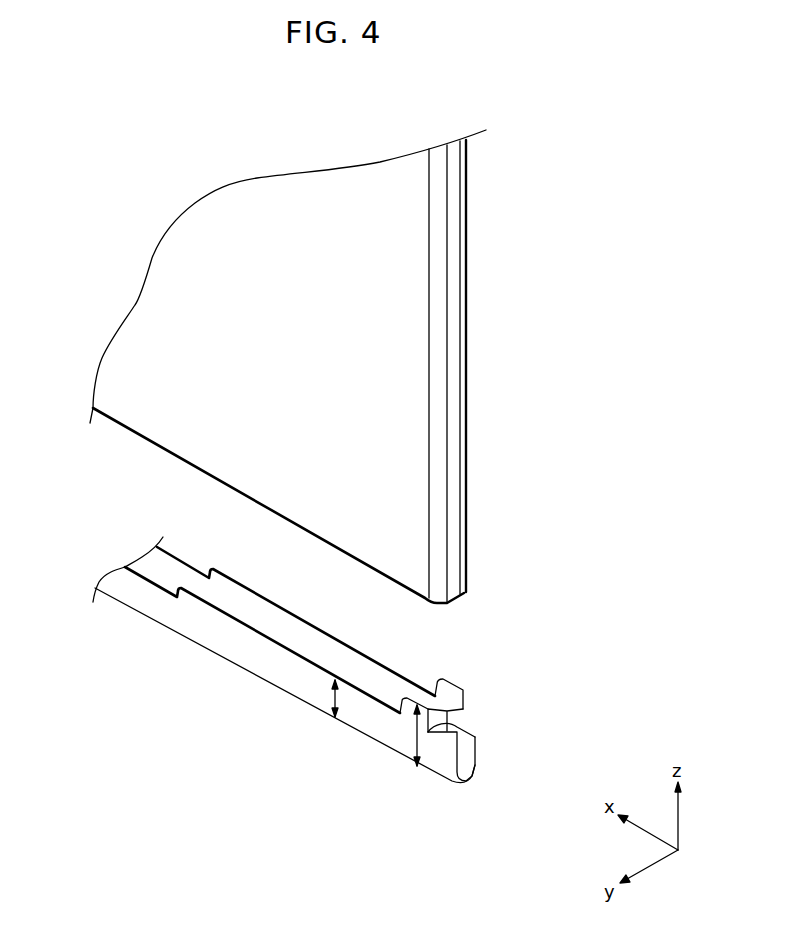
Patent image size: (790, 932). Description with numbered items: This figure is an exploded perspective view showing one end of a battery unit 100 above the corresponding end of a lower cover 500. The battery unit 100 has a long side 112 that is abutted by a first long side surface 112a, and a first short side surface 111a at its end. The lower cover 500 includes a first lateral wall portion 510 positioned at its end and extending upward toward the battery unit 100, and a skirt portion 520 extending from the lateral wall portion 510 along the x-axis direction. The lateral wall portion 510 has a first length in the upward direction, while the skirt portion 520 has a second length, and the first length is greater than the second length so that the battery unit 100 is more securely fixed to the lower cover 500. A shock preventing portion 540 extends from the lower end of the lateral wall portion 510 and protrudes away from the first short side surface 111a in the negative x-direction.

The battery unit 100 is at (317, 366).
The first short side surface 111a is at (455, 254).
The first long side surface 112a is at (247, 293).
The long side 112 is at (193, 467).
The lower cover 500 is at (327, 660).
The first lateral wall portion 510 is at (455, 710).
The skirt portion 520 is at (290, 665).
The shock preventing portion 540 is at (465, 762).